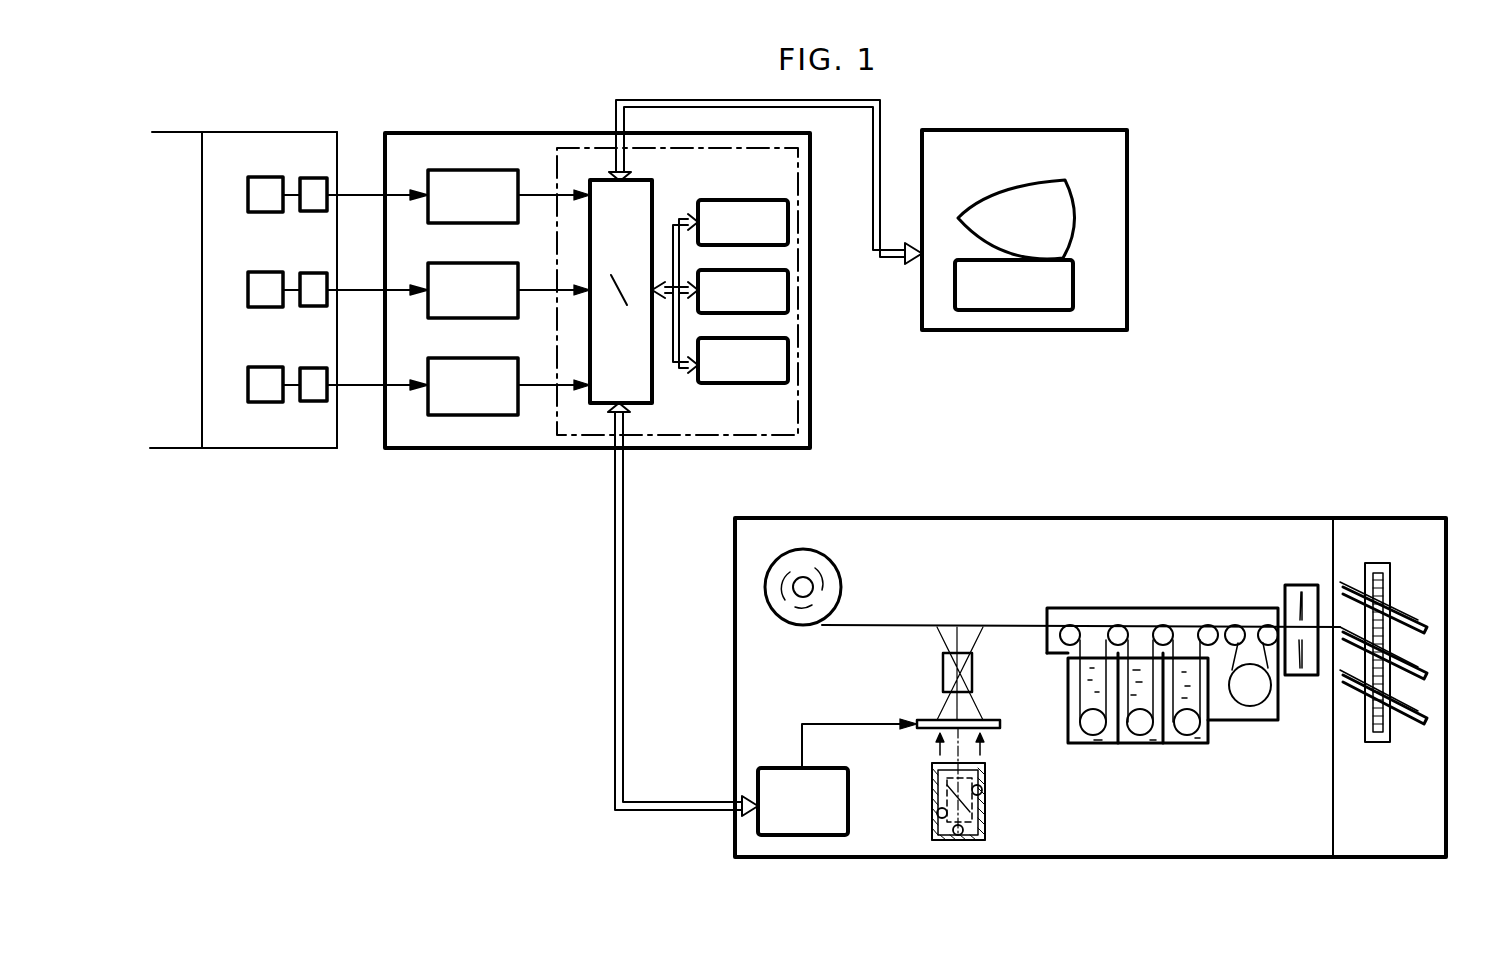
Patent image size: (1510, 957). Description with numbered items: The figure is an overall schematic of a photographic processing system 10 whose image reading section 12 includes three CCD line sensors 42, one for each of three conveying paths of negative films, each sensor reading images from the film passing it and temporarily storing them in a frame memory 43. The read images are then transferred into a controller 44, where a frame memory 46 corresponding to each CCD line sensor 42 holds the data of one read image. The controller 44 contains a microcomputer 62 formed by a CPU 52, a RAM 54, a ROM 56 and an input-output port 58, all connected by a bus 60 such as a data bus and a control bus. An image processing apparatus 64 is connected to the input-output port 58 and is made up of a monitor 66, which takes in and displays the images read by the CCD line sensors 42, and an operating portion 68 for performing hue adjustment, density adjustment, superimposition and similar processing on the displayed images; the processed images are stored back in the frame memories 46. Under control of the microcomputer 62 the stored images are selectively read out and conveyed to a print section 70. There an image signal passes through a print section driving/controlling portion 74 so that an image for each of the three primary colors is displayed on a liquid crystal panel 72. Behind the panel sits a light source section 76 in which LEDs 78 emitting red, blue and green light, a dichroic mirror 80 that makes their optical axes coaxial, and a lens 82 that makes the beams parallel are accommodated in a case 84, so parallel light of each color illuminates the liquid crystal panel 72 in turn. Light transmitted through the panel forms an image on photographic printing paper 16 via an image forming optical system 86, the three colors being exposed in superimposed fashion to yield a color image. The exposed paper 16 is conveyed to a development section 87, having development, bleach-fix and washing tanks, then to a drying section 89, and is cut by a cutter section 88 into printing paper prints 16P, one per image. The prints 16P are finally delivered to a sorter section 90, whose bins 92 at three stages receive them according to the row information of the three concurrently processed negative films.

The photographic system 10 is at (175, 448).
The camera 12 is at (288, 448).
The photographic printing paper 16 is at (867, 627).
The printing paper print 16P is at (1393, 645).
The CCD line sensor 42 is at (265, 367).
The frame memory 43 is at (320, 368).
The controller 44 is at (538, 448).
The frame memory 46 is at (486, 343).
The CPU 52 is at (788, 283).
The RAM 54 is at (730, 200).
The ROM 56 is at (742, 383).
The input-output port 58 is at (652, 375).
The bus 60 is at (682, 222).
The microcomputer 62 is at (675, 435).
The image processing apparatus 64 is at (985, 130).
The monitor 66 is at (1077, 197).
The operating portion 68 is at (1073, 270).
The print section 70 is at (888, 857).
The liquid crystal panel 72 is at (1002, 727).
The print section driving/controlling portion 74 is at (803, 835).
The light source section 76 is at (925, 838).
The LEDs 78 is at (982, 788).
The dichroic mirror 80 is at (972, 808).
The lens 82 is at (968, 765).
The case 84 is at (985, 828).
The image forming optical system 86 is at (975, 672).
The development section 87 is at (1165, 760).
The cutter section 88 is at (1293, 585).
The drying section 89 is at (1262, 740).
The sorter section 90 is at (1365, 857).
The bin 92 is at (1425, 632).